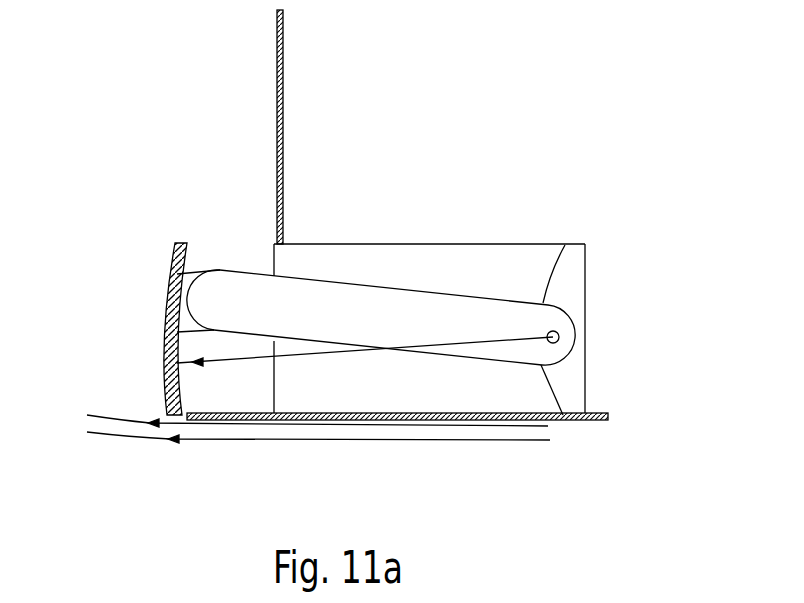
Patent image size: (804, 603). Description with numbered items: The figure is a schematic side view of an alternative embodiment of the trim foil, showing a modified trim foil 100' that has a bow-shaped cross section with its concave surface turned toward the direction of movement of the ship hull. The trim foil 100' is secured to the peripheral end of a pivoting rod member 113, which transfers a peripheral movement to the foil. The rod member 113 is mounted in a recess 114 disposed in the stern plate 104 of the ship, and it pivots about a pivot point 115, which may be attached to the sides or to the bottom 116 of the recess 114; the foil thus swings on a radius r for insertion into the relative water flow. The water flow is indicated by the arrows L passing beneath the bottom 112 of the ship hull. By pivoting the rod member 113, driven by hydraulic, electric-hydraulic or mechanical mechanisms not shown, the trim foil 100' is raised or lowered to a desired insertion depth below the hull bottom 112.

The stern plate 104 is at (283, 70).
The pivoting rod member 113 is at (308, 305).
The recess 114 is at (478, 265).
The bottom of the recess 116 is at (570, 290).
The pivot point 115 is at (559, 337).
The bottom of the ship hull 112 is at (563, 415).
The modified trim foil 100' is at (107, 329).
The direction of sheet travel L is at (218, 432).